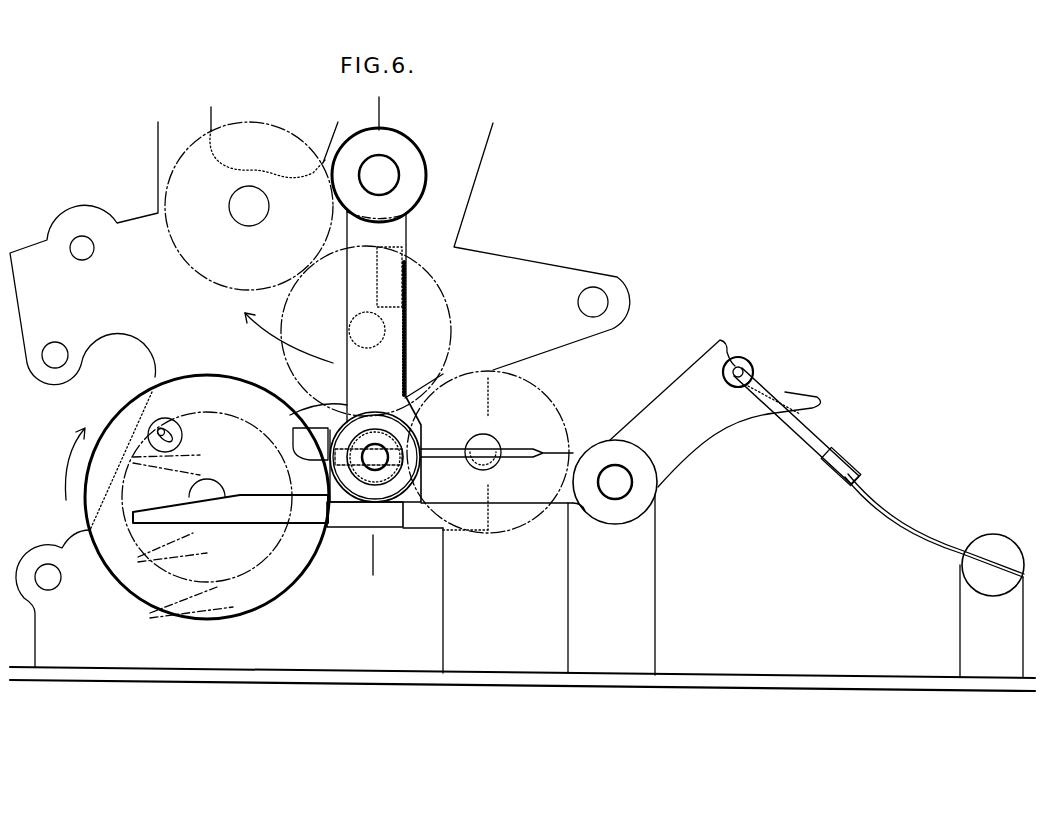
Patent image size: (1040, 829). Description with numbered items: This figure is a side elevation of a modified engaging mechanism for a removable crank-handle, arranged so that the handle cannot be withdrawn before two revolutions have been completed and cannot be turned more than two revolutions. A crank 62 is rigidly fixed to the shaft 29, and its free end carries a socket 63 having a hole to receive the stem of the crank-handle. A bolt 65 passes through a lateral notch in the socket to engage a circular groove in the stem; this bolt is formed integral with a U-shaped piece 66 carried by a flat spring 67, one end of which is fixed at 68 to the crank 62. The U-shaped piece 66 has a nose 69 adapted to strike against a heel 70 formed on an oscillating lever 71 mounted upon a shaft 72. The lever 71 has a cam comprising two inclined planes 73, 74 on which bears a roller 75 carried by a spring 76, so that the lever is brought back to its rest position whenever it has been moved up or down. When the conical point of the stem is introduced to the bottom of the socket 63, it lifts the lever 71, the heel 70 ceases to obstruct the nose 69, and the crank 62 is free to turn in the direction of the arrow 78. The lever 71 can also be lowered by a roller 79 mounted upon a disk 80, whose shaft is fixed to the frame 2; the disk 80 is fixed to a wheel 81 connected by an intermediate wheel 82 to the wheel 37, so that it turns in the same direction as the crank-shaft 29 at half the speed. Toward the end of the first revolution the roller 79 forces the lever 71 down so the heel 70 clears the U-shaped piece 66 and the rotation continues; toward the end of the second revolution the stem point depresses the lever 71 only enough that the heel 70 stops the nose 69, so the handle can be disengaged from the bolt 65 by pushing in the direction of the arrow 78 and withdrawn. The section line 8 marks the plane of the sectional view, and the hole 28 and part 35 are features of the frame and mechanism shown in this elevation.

The frame 2 is at (522, 399).
The section line 8 is at (366, 336).
The hole 28 is at (87, 249).
The shaft 29 is at (379, 175).
The rod pivot 35 is at (491, 441).
The wheel 37 is at (446, 302).
The crank 62 is at (346, 295).
The socket 63 is at (380, 436).
The bolt 65 is at (365, 478).
The U-shaped piece 66 is at (422, 491).
The flat spring 67 is at (401, 368).
The fixing point 68 is at (378, 276).
The nose 69 is at (340, 450).
The heel 70 is at (293, 440).
The oscillating lever 71 is at (512, 511).
The shaft 72 is at (615, 482).
The inclined plane 73 is at (731, 352).
The inclined plane 74 is at (792, 393).
The roller 75 is at (752, 367).
The spring 76 is at (880, 503).
The arrow 78 is at (257, 328).
The roller 79 is at (168, 418).
The disk 80 is at (127, 407).
The wheel 81 is at (268, 555).
The intermediate wheel 82 is at (312, 410).